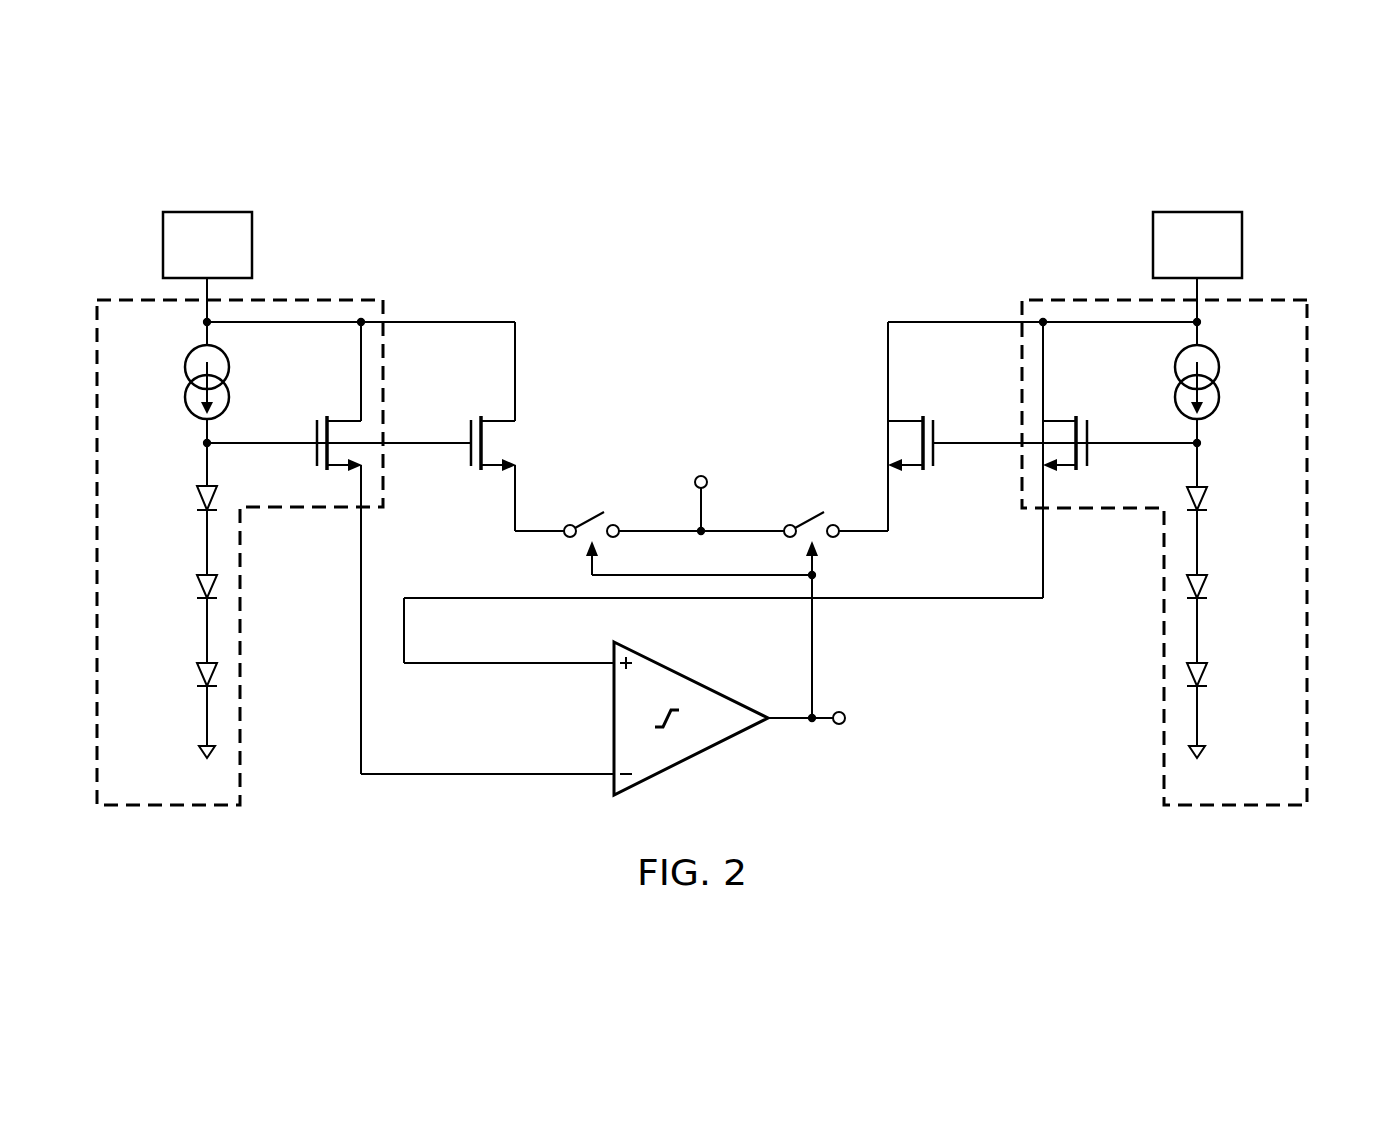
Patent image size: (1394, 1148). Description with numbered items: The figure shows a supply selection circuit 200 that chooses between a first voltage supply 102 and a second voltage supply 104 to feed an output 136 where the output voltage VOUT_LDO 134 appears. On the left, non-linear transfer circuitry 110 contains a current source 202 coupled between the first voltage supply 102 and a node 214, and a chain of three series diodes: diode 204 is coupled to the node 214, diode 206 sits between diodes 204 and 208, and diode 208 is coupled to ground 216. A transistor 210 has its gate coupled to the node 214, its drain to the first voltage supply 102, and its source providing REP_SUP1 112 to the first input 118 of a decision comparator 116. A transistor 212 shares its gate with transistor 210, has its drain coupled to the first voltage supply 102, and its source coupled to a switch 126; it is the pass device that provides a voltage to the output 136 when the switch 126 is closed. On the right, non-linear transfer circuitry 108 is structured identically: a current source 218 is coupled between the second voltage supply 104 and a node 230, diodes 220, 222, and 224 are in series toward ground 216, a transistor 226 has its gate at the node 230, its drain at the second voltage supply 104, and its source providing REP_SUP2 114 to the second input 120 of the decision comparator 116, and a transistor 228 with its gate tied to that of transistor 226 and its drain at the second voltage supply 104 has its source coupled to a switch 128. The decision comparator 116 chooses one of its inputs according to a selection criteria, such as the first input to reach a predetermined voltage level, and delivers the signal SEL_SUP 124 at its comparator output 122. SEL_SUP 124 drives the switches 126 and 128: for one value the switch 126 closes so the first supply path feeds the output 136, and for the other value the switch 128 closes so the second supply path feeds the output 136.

The first voltage supply 102 is at (205, 211).
The second voltage supply 104 is at (1199, 211).
The non-linear transfer circuitry 108 is at (1313, 378).
The non-linear transfer circuitry 110 is at (90, 378).
The REP_SUP1 112 is at (482, 777).
The REP_SUP2 114 is at (492, 666).
The decision comparator 116 is at (690, 760).
The first input 118 is at (612, 782).
The second input 120 is at (612, 668).
The comparator output 122 is at (774, 726).
The SEL_SUP 124 is at (841, 726).
The switch 126 is at (594, 516).
The switch 128 is at (816, 512).
The VOUT_LDO 134 is at (702, 475).
The output 136 is at (704, 510).
The supply selection circuit 200 is at (466, 178).
The current source 202 is at (185, 366).
The diode 204 is at (196, 503).
The diode 206 is at (196, 590).
The diode 208 is at (196, 679).
The transistor 210 is at (315, 436).
The transistor 212 is at (469, 436).
The node 214 is at (203, 443).
The ground 216 is at (200, 752).
The current source 218 is at (1220, 366).
The diode 220 is at (1208, 503).
The diode 222 is at (1208, 590).
The diode 224 is at (1208, 679).
The transistor 226 is at (1089, 436).
The transistor 228 is at (935, 436).
The node 230 is at (1202, 443).